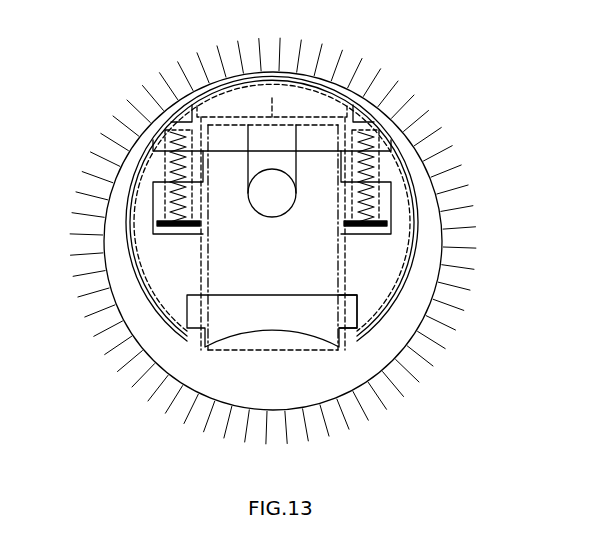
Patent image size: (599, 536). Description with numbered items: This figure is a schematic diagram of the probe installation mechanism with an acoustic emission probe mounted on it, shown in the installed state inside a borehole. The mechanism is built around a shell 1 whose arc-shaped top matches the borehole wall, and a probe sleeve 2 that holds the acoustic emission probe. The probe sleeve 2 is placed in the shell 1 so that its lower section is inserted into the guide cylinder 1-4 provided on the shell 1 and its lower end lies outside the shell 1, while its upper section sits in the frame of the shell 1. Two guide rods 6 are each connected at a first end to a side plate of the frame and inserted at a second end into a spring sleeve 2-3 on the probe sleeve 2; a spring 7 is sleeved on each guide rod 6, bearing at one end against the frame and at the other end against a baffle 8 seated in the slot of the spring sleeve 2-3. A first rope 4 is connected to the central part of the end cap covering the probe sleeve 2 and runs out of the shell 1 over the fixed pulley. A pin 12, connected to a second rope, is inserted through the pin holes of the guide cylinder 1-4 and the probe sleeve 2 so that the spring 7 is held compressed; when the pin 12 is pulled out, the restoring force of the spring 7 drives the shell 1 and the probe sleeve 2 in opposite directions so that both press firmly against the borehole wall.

The shell 1 is at (192, 107).
The first rope 4 is at (272, 98).
The probe sleeve 2 is at (335, 257).
The spring sleeve 2-3 is at (387, 200).
The guide rod 6 is at (177, 162).
The spring 7 is at (172, 177).
The baffle 8 is at (180, 223).
The pin 12 is at (273, 315).
The guide cylinder 1-4 is at (355, 310).